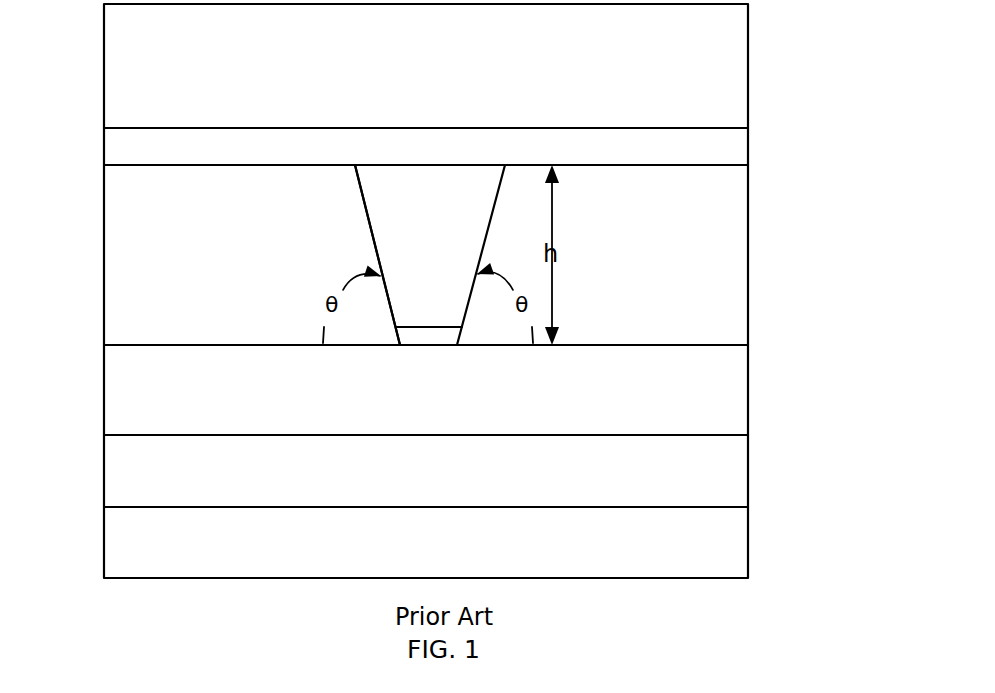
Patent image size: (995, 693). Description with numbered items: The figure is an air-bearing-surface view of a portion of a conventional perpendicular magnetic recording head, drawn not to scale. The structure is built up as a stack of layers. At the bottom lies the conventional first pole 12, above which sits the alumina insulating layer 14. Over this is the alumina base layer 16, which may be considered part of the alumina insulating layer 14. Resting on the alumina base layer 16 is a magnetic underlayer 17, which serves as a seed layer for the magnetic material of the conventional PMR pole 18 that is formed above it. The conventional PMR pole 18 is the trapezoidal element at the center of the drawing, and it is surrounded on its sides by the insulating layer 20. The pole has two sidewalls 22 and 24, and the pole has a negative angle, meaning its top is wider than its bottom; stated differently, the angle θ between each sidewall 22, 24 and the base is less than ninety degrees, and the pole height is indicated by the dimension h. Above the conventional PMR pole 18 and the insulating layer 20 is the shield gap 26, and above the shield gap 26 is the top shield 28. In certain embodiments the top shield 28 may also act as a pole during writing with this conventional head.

The conventional first pole 12 is at (748, 578).
The alumina insulating layer 14 is at (104, 490).
The alumina base layer 16 is at (748, 367).
The magnetic underlayer 17 is at (432, 345).
The conventional PMR pole 18 is at (388, 165).
The insulating layer 20 is at (104, 260).
The sidewall 22 is at (480, 308).
The sidewall 24 is at (366, 243).
The shield gap 26 is at (748, 145).
The top shield 28 is at (748, 62).